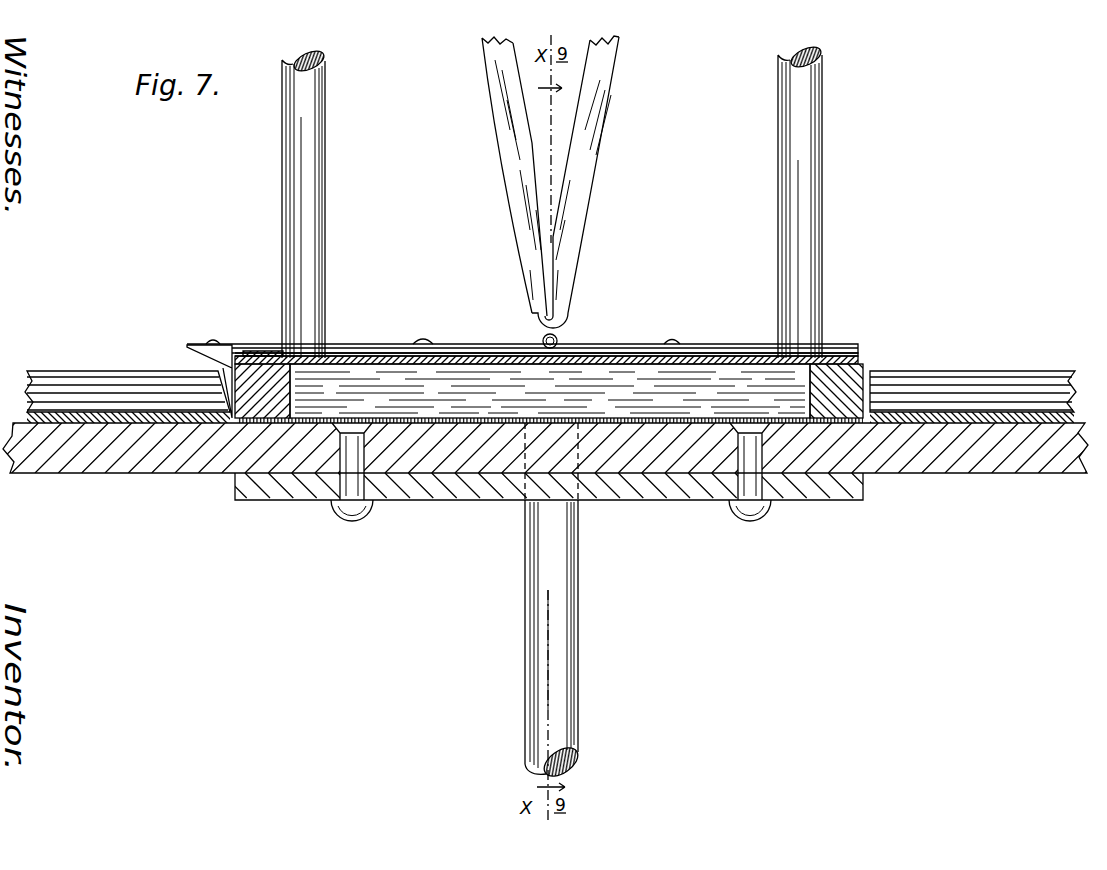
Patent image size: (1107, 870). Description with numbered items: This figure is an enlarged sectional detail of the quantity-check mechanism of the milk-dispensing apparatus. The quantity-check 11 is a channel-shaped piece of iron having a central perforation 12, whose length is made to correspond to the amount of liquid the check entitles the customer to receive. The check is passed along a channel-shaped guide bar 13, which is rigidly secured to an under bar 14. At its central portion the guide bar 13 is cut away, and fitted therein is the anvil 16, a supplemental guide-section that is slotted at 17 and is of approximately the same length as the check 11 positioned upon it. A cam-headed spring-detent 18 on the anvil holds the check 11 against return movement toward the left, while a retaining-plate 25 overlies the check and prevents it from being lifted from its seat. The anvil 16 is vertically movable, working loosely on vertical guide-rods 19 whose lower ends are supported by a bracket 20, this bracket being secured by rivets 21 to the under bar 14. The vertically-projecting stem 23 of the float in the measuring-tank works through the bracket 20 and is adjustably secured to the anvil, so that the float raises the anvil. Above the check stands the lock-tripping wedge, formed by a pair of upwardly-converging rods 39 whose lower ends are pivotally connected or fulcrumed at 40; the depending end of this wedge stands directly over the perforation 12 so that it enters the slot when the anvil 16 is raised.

The quantity-check 11 is at (725, 362).
The central perforation 12 is at (613, 357).
The channel-shaped guide bar 13 is at (90, 385).
The under bar 14 is at (152, 465).
The anvil 16 is at (280, 405).
The slot of anvil 17 is at (353, 383).
The cam-headed spring-detent 18 is at (223, 353).
The vertical guide-rods 19 is at (312, 225).
The bracket 20 is at (443, 495).
The rivets 21 is at (355, 518).
The vertically-projecting stem 23 is at (553, 590).
The retaining-plate 25 is at (837, 352).
The upwardly-converging rods 39 is at (528, 203).
The pivotal connection of wedge rods 40 is at (562, 318).